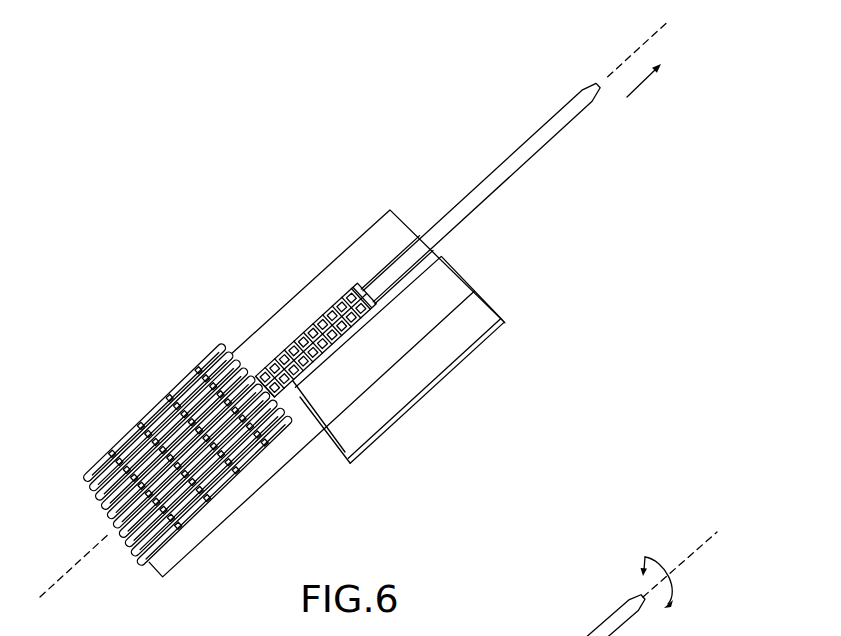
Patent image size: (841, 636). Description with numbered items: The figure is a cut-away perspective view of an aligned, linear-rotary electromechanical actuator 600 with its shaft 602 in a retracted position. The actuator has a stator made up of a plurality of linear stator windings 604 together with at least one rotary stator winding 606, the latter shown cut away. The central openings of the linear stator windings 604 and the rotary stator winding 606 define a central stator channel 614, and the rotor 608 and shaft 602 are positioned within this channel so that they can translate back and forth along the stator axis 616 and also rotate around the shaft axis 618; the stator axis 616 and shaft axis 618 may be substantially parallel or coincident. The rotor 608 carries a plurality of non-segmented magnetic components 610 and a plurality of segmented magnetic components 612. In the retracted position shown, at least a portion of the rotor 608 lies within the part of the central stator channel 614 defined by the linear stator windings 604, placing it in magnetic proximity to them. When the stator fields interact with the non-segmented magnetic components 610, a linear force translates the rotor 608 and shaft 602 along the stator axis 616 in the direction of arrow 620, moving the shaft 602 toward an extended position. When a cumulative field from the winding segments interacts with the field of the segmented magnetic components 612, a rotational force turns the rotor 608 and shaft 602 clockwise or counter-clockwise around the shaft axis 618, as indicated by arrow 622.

The aligned, linear-rotary electromechanical actuator 600 is at (176, 246).
The shaft 602 is at (530, 163).
The linear stator windings 604 is at (181, 400).
The rotary stator winding 606 is at (325, 285).
The rotor 608 is at (362, 331).
The non-segmented magnetic components 610 is at (317, 358).
The segmented magnetic components 612 is at (340, 338).
The central stator channel 614 is at (401, 254).
The stator axis 616 is at (94, 550).
The shaft axis 618 is at (661, 30).
The arrow 620 is at (640, 85).
The arrow 622 is at (647, 557).